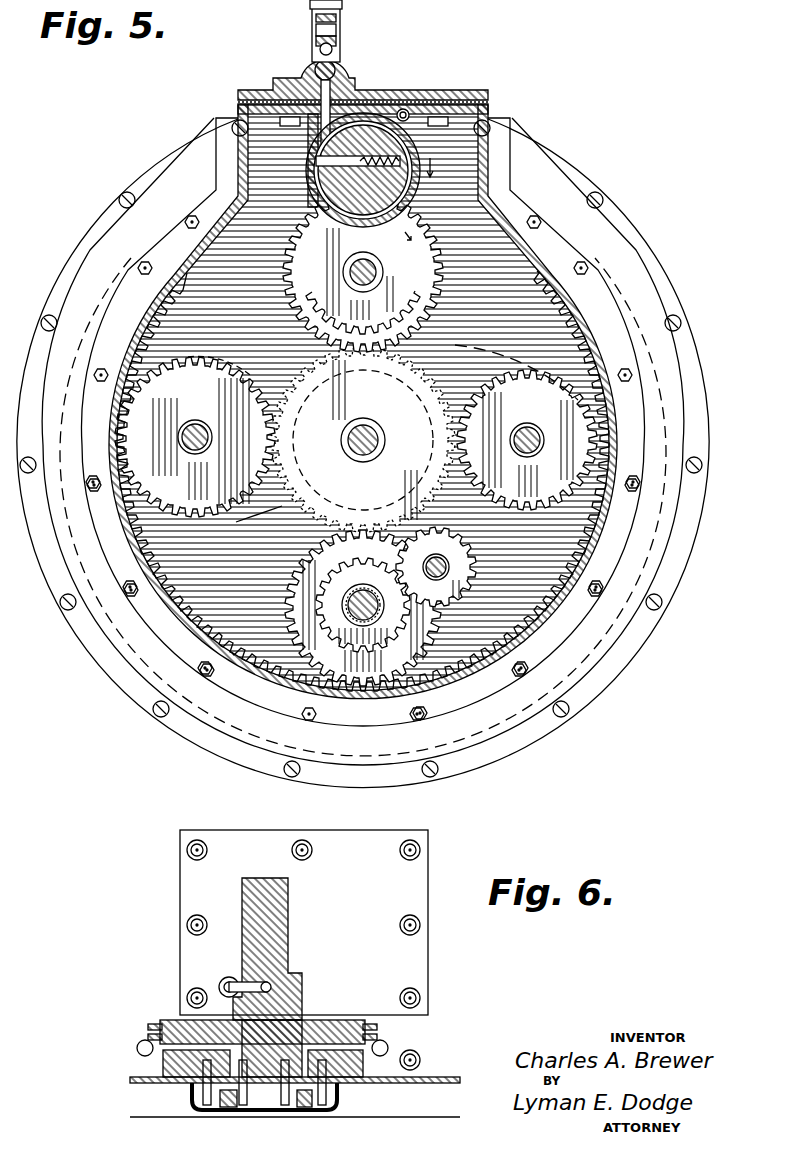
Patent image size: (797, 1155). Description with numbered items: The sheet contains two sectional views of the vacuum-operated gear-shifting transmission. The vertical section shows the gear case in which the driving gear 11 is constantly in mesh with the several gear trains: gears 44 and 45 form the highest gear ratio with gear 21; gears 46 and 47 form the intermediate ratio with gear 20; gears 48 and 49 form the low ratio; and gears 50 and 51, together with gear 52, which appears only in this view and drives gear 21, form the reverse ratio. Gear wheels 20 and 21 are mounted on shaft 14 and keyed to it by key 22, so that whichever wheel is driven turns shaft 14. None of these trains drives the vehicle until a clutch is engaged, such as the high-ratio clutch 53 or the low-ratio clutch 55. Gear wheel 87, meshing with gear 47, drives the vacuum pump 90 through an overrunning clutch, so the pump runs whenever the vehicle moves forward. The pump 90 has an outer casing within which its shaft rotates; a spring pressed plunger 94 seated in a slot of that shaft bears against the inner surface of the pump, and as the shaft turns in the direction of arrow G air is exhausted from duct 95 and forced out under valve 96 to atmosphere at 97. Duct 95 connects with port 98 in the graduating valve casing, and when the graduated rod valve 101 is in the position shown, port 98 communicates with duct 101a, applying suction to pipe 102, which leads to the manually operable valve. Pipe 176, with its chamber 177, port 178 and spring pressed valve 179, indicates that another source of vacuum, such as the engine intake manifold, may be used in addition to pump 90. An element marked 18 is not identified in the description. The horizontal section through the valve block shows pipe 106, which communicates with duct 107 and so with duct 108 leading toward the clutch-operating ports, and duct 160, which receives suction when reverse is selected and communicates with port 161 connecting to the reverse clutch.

In FIG. 5, the operating rod 18 is at (318, 33).
In FIG. 5, the pipe 176 is at (340, 24).
In FIG. 5, the chamber 177 is at (342, 36).
In FIG. 5, the port 178 is at (343, 45).
In FIG. 5, the valve 179 is at (319, 50).
In FIG. 5, the duct or port 98 is at (331, 90).
In FIG. 6, the duct or port 98 is at (266, 962).
In FIG. 5, the graduated rod valve 101 is at (300, 66).
In FIG. 5, the valve 96 is at (406, 108).
In FIG. 5, the duct 95 is at (320, 124).
In FIG. 5, the atmospheric outlet 97 is at (424, 141).
In FIG. 5, the arrow G is at (435, 170).
In FIG. 5, the spring pressed plunger 94 is at (325, 184).
In FIG. 5, the vacuum pump 90 is at (406, 190).
In FIG. 5, the gear wheel 87 is at (420, 226).
In FIG. 5, the gear 46 is at (288, 268).
In FIG. 5, the gear 47 is at (415, 274).
In FIG. 5, the clutch 53 is at (528, 300).
In FIG. 5, the gear 48 is at (176, 368).
In FIG. 5, the gear 49 is at (216, 372).
In FIG. 5, the gear 44 is at (540, 372).
In FIG. 5, the gear 45 is at (560, 396).
In FIG. 5, the key 22 is at (372, 426).
In FIG. 5, the shaft 14 is at (351, 446).
In FIG. 5, the gear 11 is at (236, 522).
In FIG. 5, the gear wheel 21 is at (278, 528).
In FIG. 5, the gear wheel 20 is at (449, 522).
In FIG. 5, the clutch 55 is at (205, 585).
In FIG. 5, the gear 50 is at (288, 611).
In FIG. 5, the gear 51 is at (352, 652).
In FIG. 5, the gear 52 is at (456, 604).
In FIG. 6, the pipe 102 is at (228, 982).
In FIG. 6, the duct 101a is at (271, 988).
In FIG. 6, the duct 107 is at (334, 1048).
In FIG. 6, the pipe 106 is at (386, 1046).
In FIG. 6, the duct 160 is at (140, 1046).
In FIG. 6, the port 161 is at (222, 1106).
In FIG. 6, the duct 108 is at (300, 1112).